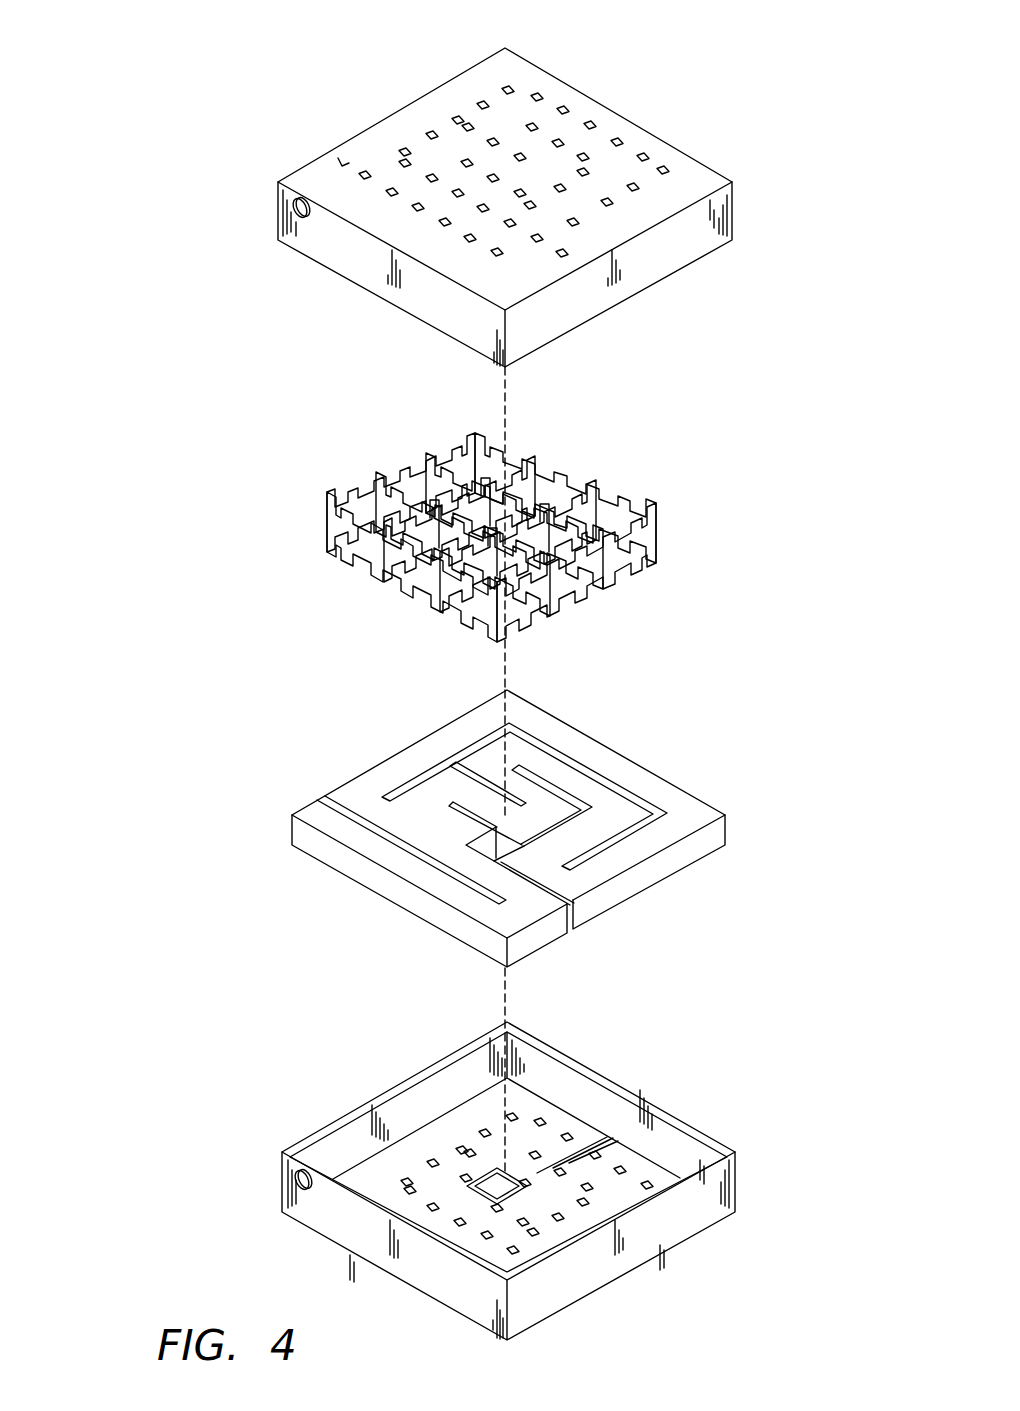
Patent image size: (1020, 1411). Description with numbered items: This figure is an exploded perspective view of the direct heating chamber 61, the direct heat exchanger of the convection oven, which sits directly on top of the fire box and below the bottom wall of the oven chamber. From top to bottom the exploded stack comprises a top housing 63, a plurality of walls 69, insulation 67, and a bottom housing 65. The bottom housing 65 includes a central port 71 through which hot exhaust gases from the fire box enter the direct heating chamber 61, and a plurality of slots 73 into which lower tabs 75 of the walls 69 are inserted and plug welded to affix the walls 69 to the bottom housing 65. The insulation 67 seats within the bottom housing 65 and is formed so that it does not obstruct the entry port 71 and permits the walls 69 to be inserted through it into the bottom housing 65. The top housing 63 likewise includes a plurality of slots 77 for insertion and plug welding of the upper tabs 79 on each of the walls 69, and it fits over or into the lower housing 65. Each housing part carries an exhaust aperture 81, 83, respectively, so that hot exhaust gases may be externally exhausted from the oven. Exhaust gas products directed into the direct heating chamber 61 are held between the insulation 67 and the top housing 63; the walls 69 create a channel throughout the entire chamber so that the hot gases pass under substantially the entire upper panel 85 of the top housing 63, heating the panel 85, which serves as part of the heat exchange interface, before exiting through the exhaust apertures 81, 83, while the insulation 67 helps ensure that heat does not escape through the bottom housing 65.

The direct heating chamber 61 is at (176, 246).
The top housing 63 is at (683, 148).
The bottom housing 65 is at (638, 1092).
The insulation 67 is at (636, 762).
The walls 69 is at (672, 522).
The central port 71 is at (480, 1175).
The slots 73 is at (433, 1163).
The lower tabs 75 is at (373, 582).
The slots 77 is at (590, 125).
The upper tabs 79 is at (328, 487).
The exhaust aperture 81 is at (293, 208).
The exhaust aperture 83 is at (295, 1180).
The upper panel 85 is at (415, 115).